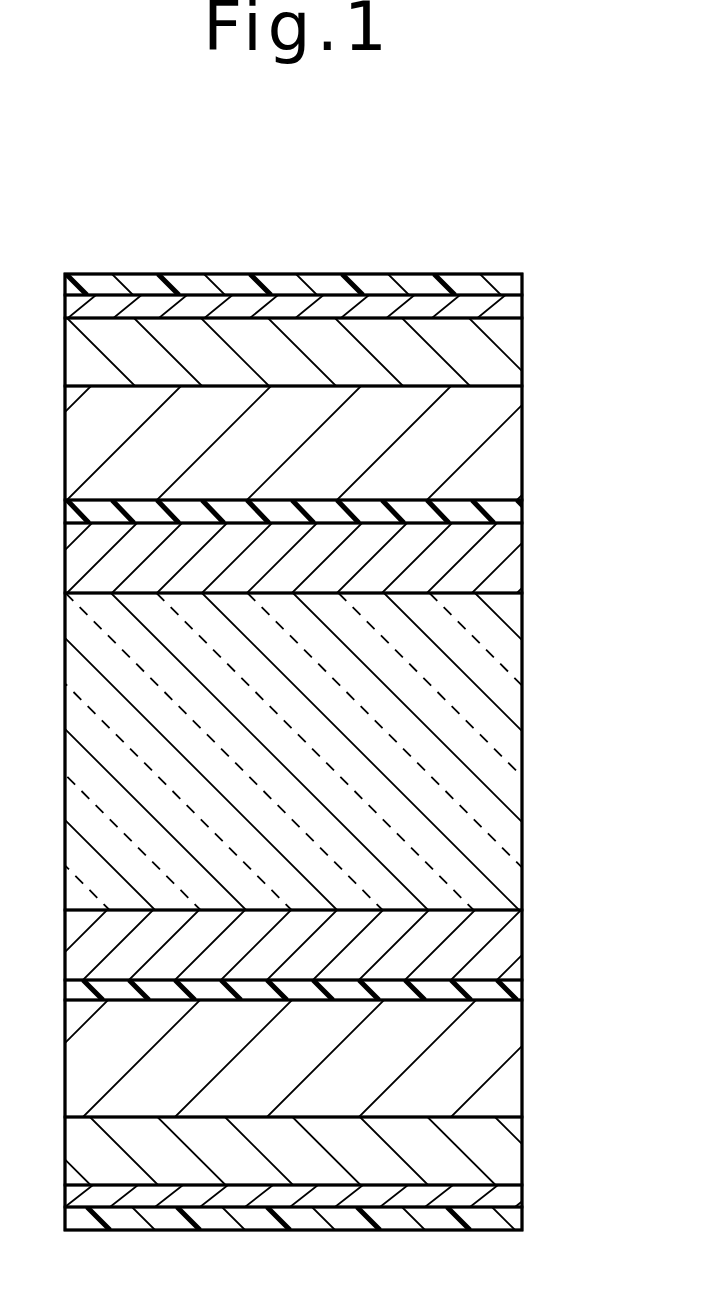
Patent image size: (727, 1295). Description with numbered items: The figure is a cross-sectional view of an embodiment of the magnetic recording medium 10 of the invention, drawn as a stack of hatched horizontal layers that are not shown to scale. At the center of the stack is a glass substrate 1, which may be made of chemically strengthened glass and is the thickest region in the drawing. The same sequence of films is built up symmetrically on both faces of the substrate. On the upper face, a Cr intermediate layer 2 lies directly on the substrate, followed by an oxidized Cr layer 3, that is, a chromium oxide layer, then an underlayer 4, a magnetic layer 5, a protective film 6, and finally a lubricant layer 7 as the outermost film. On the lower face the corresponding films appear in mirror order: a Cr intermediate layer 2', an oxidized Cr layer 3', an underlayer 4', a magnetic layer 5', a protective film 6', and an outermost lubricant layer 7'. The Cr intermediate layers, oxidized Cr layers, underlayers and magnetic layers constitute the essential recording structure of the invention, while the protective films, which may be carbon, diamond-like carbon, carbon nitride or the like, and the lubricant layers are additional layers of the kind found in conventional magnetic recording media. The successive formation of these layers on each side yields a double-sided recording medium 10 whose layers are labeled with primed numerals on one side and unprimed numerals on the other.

The magnetic recording medium 10 is at (208, 258).
The lubricant layer 7 is at (336, 267).
The protective film 6 is at (316, 304).
The magnetic layer 5 is at (333, 352).
The underlayer 4 is at (315, 443).
The oxidized Cr layer 3 is at (331, 511).
The Cr intermediate layer 2 is at (309, 558).
The glass substrate 1 is at (508, 750).
The Cr intermediate layer 2' is at (316, 945).
The oxidized Cr layer 3' is at (330, 986).
The underlayer 4' is at (296, 1058).
The magnetic layer 5' is at (307, 1151).
The protective film 6' is at (328, 1190).
The lubricant layer 7' is at (328, 1234).